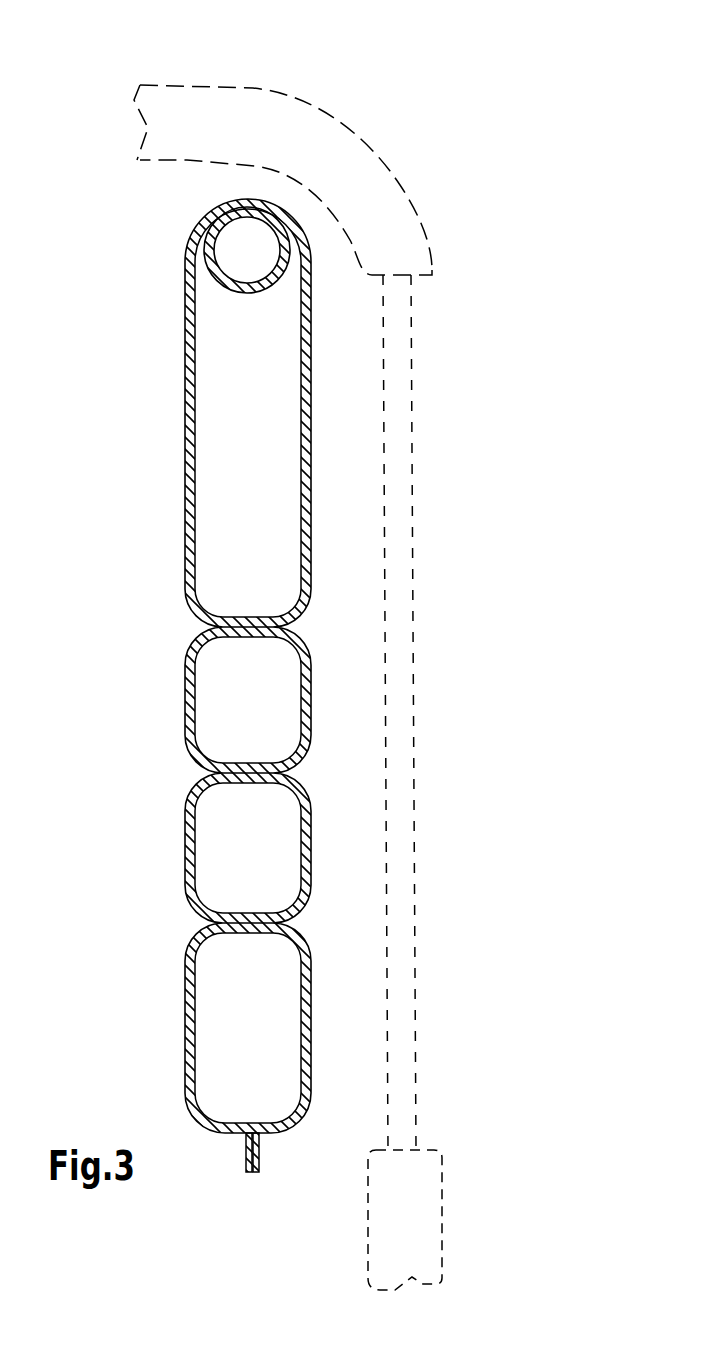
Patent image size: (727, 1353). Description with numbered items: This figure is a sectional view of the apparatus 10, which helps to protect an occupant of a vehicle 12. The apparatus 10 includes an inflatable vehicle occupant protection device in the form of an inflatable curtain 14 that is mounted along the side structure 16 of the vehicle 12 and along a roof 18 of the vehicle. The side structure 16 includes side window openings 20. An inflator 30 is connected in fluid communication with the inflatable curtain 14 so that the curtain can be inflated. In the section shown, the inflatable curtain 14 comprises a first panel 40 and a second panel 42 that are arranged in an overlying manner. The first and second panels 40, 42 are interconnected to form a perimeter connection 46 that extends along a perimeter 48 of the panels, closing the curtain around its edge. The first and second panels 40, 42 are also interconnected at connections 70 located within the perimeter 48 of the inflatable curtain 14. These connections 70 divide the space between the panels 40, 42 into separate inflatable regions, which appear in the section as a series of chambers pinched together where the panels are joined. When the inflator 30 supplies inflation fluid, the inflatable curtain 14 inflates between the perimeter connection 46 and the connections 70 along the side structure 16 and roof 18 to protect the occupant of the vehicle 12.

The apparatus 10 is at (472, 158).
The vehicle 12 is at (442, 112).
The inflatable curtain 14 is at (190, 337).
The side structure 16 is at (412, 1217).
The roof 18 is at (215, 123).
The side window openings 20 is at (403, 915).
The inflator 30 is at (213, 261).
The first panel 40 is at (300, 455).
The second panel 42 is at (190, 453).
The perimeter connection 46 is at (247, 1153).
The perimeter 48 is at (257, 1170).
The connections 70 is at (250, 630).